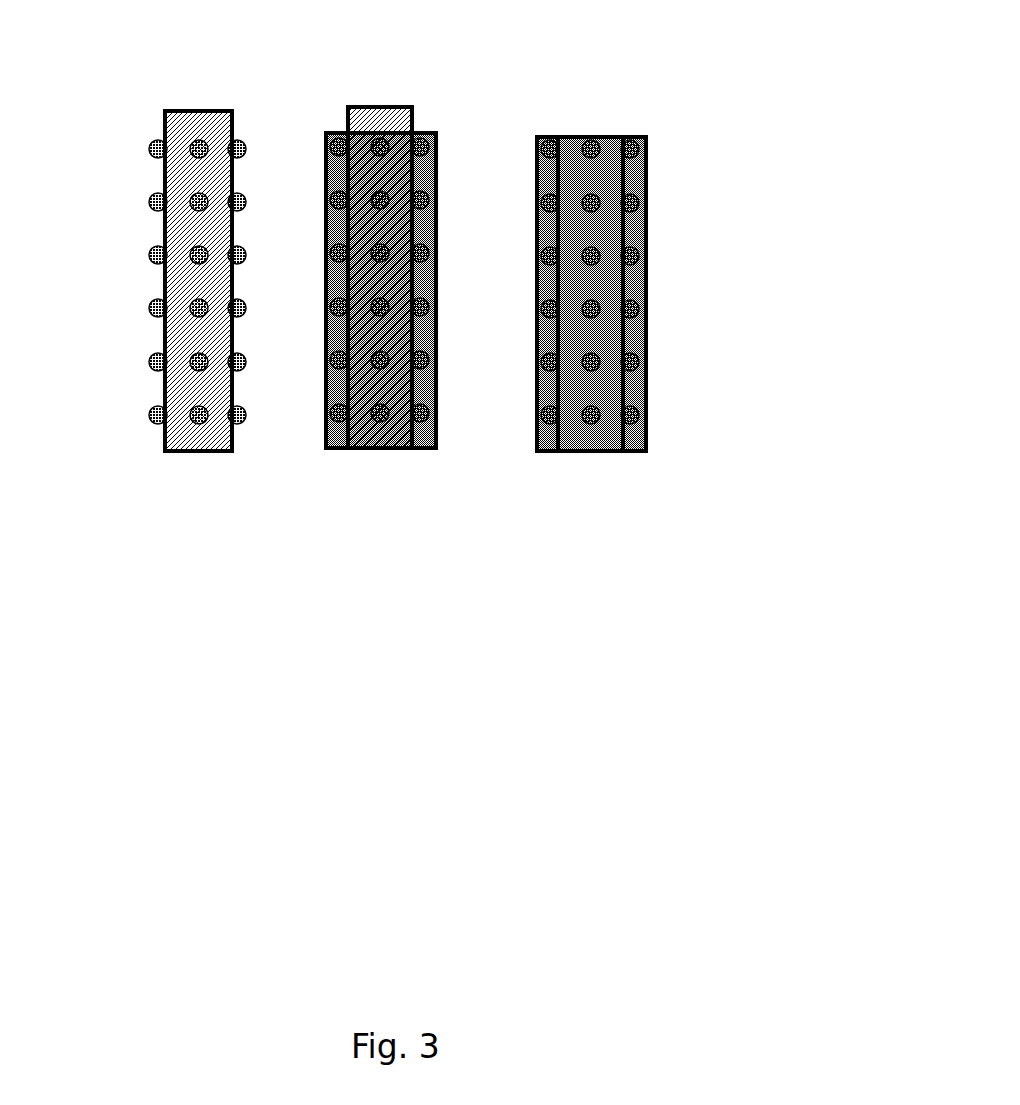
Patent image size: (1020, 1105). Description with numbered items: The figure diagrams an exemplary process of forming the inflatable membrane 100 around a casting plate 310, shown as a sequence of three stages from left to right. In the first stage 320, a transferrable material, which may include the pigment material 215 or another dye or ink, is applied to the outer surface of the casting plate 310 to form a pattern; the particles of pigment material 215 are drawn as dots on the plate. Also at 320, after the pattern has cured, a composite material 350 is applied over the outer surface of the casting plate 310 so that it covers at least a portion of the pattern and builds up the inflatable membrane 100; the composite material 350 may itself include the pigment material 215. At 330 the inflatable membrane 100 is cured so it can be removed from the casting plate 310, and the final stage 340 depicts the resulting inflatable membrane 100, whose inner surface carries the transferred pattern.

The inflatable membrane 100 is at (639, 307).
The pigment material 215 is at (148, 148).
The casting plate 310 is at (380, 107).
The applying step 320 is at (203, 302).
The curing step 330 is at (404, 331).
The third stage structure 340 is at (583, 480).
The composite material 350 is at (436, 134).